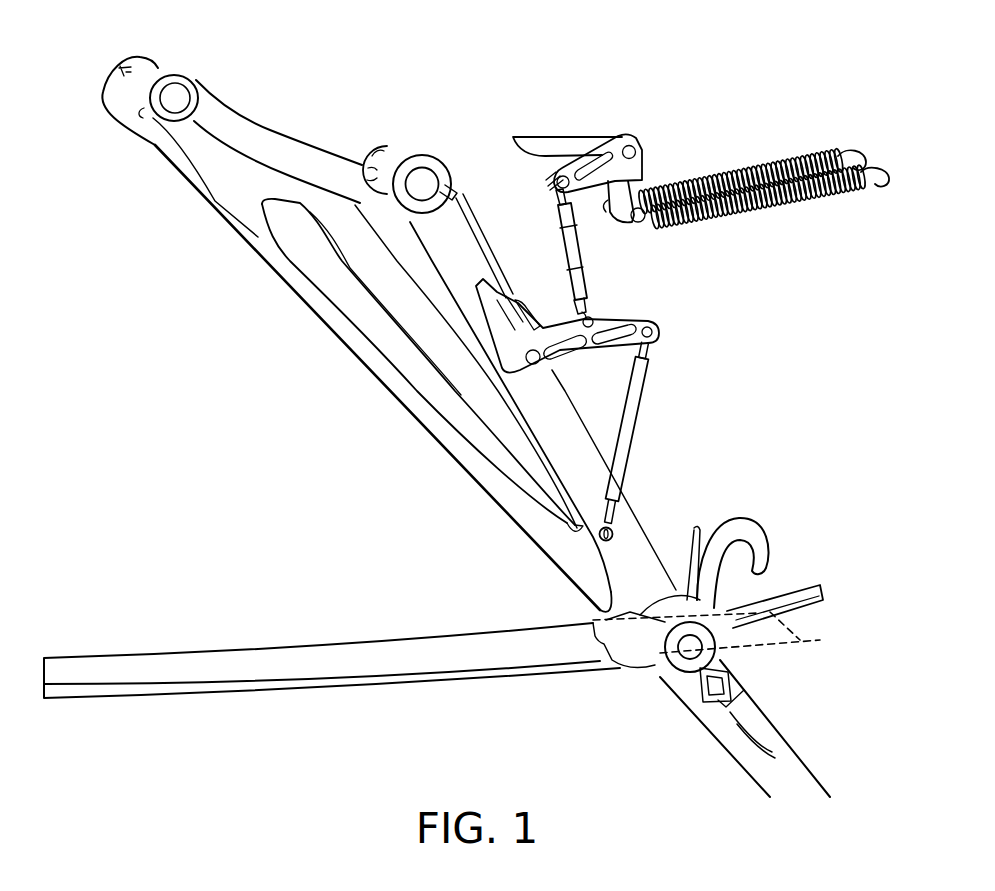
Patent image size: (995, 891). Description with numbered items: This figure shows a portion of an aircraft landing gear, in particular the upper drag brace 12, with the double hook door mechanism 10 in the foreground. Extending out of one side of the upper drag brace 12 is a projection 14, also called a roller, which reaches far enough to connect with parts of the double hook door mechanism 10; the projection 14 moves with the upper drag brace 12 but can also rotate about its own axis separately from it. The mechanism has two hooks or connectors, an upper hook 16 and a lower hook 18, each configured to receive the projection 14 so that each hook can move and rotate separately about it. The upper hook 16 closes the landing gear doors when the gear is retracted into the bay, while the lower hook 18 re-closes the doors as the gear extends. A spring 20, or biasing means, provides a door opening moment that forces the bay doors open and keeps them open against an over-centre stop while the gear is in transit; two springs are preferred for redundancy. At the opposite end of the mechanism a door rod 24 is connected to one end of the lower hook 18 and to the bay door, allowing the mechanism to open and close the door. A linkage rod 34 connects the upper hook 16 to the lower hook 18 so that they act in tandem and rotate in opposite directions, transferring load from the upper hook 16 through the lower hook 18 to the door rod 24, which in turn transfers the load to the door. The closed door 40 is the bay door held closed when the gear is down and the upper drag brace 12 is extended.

The double hook door mechanism 10 is at (737, 312).
The upper drag brace 12 is at (261, 244).
The projection 14 is at (500, 292).
The upper hook 16 is at (615, 118).
The lower hook 18 is at (660, 338).
The spring 20 is at (745, 166).
The door rod 24 is at (632, 402).
The linkage rod 34 is at (575, 248).
The closed door 40 is at (366, 667).